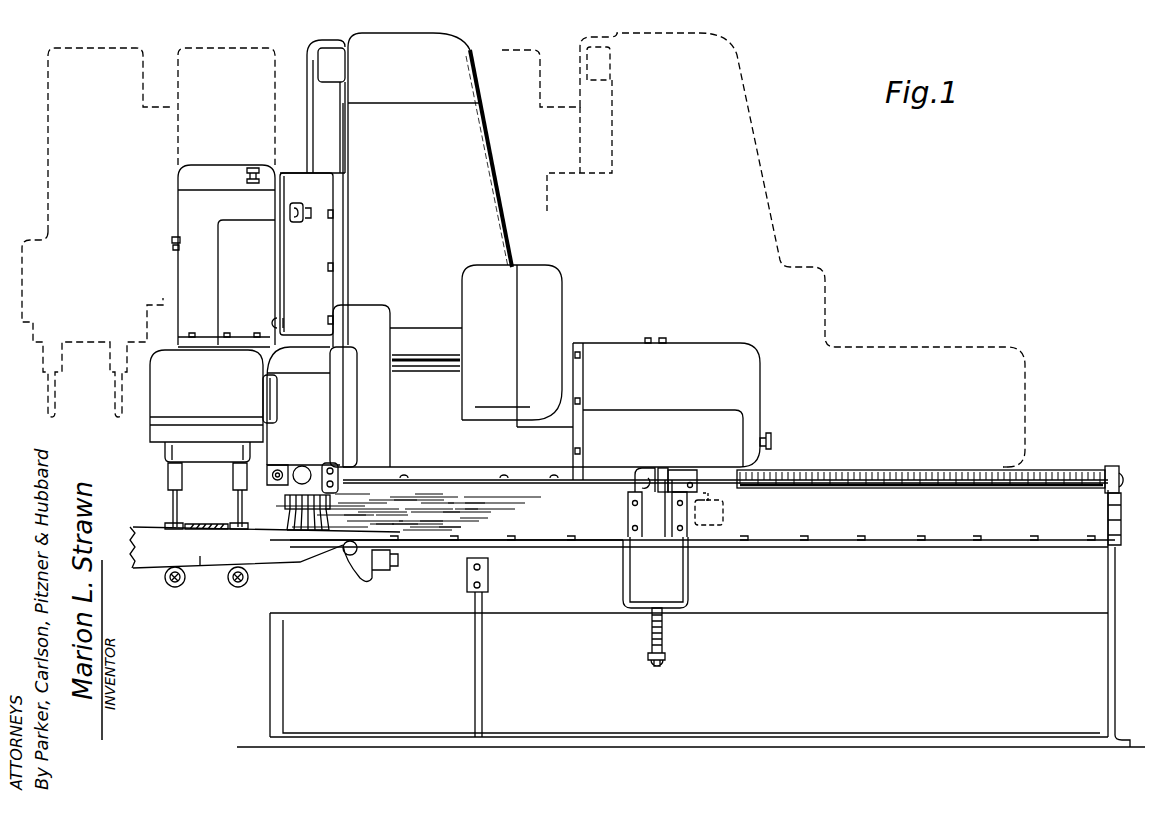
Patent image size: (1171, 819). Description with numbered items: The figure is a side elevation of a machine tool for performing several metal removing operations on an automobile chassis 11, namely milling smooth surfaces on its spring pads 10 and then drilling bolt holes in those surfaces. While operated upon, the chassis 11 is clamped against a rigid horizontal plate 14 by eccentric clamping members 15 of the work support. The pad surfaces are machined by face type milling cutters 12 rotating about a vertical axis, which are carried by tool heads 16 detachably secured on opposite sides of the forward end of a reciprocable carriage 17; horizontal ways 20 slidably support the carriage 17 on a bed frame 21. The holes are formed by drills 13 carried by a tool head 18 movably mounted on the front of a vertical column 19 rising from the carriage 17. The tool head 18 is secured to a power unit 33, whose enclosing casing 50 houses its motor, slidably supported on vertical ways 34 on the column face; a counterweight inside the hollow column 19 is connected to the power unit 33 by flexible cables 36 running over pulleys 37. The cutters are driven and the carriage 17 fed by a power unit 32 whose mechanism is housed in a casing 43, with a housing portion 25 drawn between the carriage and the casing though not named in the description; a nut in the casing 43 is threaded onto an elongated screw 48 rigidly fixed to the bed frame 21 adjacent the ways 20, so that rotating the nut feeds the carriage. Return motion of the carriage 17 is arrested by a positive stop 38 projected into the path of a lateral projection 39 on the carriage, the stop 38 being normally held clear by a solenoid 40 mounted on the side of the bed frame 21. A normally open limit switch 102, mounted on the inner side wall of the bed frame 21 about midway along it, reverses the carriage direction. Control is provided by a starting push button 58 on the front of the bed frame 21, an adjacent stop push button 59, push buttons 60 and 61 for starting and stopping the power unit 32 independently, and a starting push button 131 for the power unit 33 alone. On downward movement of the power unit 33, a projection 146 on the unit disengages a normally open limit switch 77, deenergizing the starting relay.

The spring pads 10 is at (165, 522).
The automobile chassis 11 is at (200, 566).
The face type milling cutters 12 is at (408, 512).
The drills 13 is at (172, 498).
The rigid horizontal plate 14 is at (195, 525).
The eccentric clamping members 15 is at (168, 582).
The tool heads 16 is at (283, 410).
The reciprocable carriage 17 is at (430, 478).
The tool head 18 is at (165, 396).
The vertical column 19 is at (490, 208).
The horizontal ways 20 is at (600, 483).
The bed frame 21 is at (1088, 593).
The motor housing 25 is at (426, 332).
The power unit 32 is at (700, 342).
The power unit 33 is at (48, 176).
The vertical ways 34 is at (280, 270).
The flexible cables 36 is at (308, 84).
The pulleys 37 is at (325, 45).
The positive stop 38 is at (650, 470).
The lateral projection 39 is at (668, 470).
The solenoid 40 is at (630, 580).
The casing 43 is at (745, 405).
The elongated screw 48 is at (908, 472).
The enclosing casing 50 is at (188, 203).
The starting push button 58 is at (474, 568).
The stop push button 59 is at (474, 586).
The push button 60 is at (647, 340).
The push button 61 is at (663, 340).
The limit switch 77 is at (307, 218).
The limit switch 102 is at (724, 513).
The starting push button 131 is at (171, 241).
The projection 146 is at (282, 324).